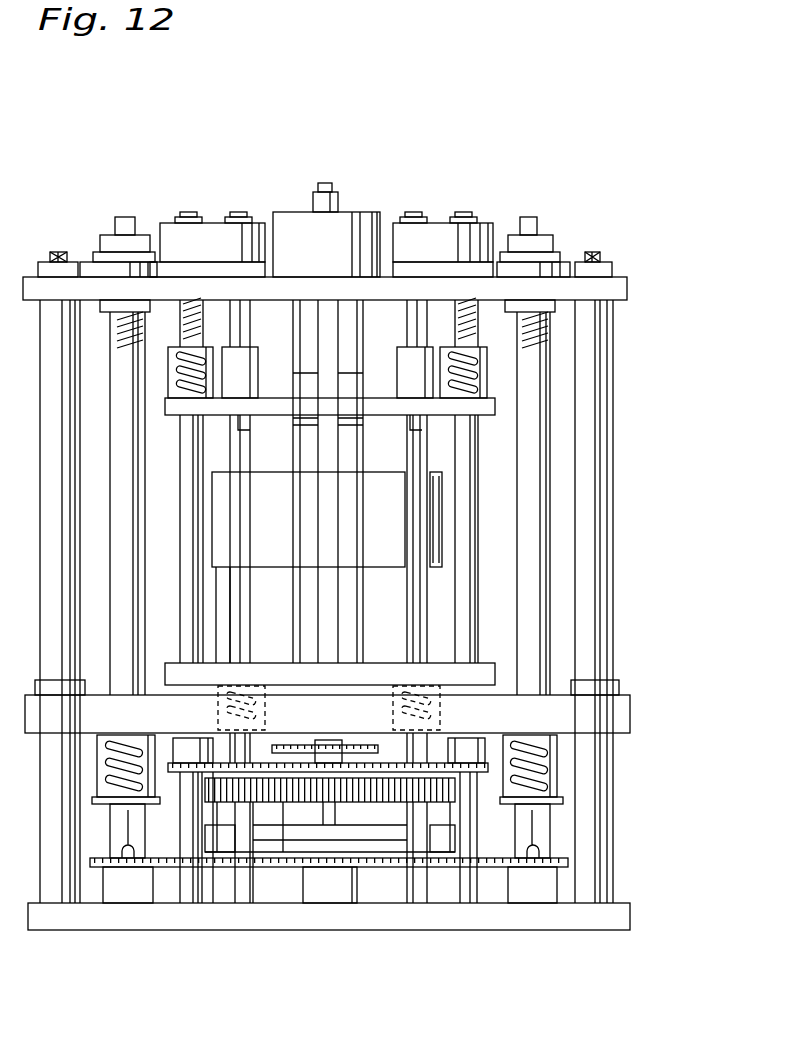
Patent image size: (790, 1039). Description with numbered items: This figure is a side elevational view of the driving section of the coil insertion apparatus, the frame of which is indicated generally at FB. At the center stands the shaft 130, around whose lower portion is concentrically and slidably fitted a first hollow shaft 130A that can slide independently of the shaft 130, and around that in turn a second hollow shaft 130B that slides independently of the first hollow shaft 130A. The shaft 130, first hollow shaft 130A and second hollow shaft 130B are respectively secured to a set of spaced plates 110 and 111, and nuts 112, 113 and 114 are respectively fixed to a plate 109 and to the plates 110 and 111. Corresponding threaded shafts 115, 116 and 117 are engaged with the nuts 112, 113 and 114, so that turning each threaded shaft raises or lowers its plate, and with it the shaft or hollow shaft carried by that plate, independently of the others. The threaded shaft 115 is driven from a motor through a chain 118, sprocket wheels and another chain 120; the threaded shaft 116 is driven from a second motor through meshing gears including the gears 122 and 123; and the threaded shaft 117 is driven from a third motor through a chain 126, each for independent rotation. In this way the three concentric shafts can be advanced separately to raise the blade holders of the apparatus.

The frame base assembly FB is at (612, 155).
The shaft 130 is at (322, 183).
The first hollow shaft 130A is at (338, 195).
The second hollow shaft 130B is at (330, 208).
The threaded shaft 115 is at (473, 318).
The nut 114 is at (483, 362).
The plate 111 is at (475, 407).
The threaded shaft 116 is at (413, 460).
The threaded shaft 117 is at (528, 583).
The plate 110 is at (487, 675).
The plate 109 is at (617, 707).
The nut 113 is at (440, 712).
The nut 112 is at (547, 775).
The chain 126 is at (553, 858).
The chain 118 is at (175, 772).
The chain 120 is at (288, 753).
The gear 122 is at (333, 790).
The gear 123 is at (227, 792).